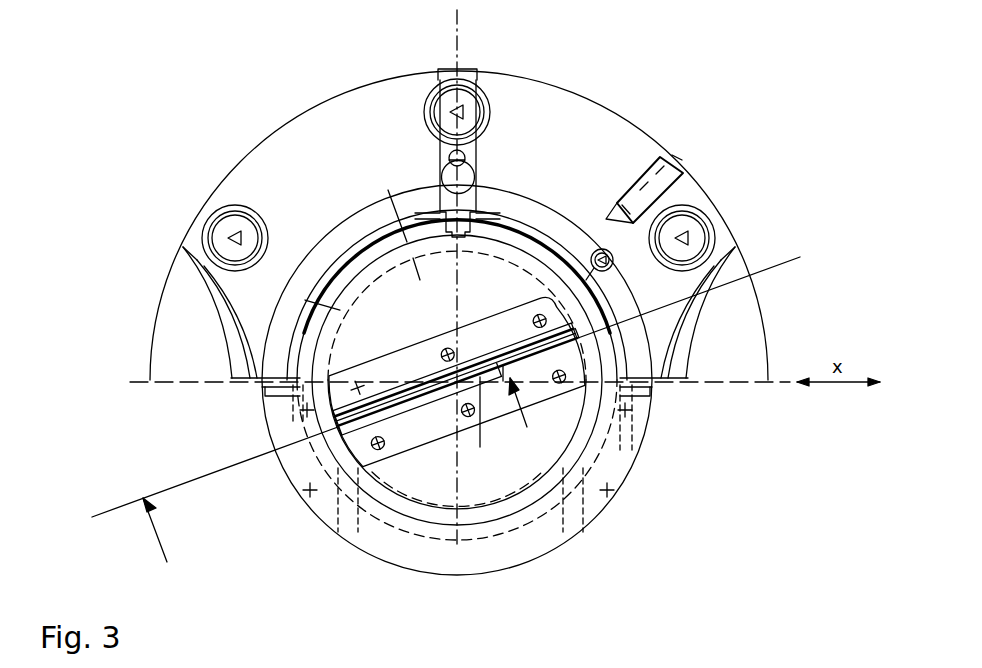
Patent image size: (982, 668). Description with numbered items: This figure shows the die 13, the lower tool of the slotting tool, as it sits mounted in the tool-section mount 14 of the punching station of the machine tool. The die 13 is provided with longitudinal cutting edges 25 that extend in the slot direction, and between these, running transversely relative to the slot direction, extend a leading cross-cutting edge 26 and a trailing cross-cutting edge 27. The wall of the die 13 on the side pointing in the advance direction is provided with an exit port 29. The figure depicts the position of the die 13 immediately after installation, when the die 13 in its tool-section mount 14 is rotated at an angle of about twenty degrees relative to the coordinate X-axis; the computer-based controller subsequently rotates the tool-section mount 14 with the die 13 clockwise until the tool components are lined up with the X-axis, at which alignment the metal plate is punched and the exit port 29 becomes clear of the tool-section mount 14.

The die 13 is at (635, 468).
The tool-section mount 14 is at (298, 153).
The longitudinal cutting edges 25 is at (407, 386).
The leading cross-cutting edge 26 is at (583, 334).
The trailing cross-cutting edge 27 is at (360, 425).
The exit port 29 is at (337, 433).